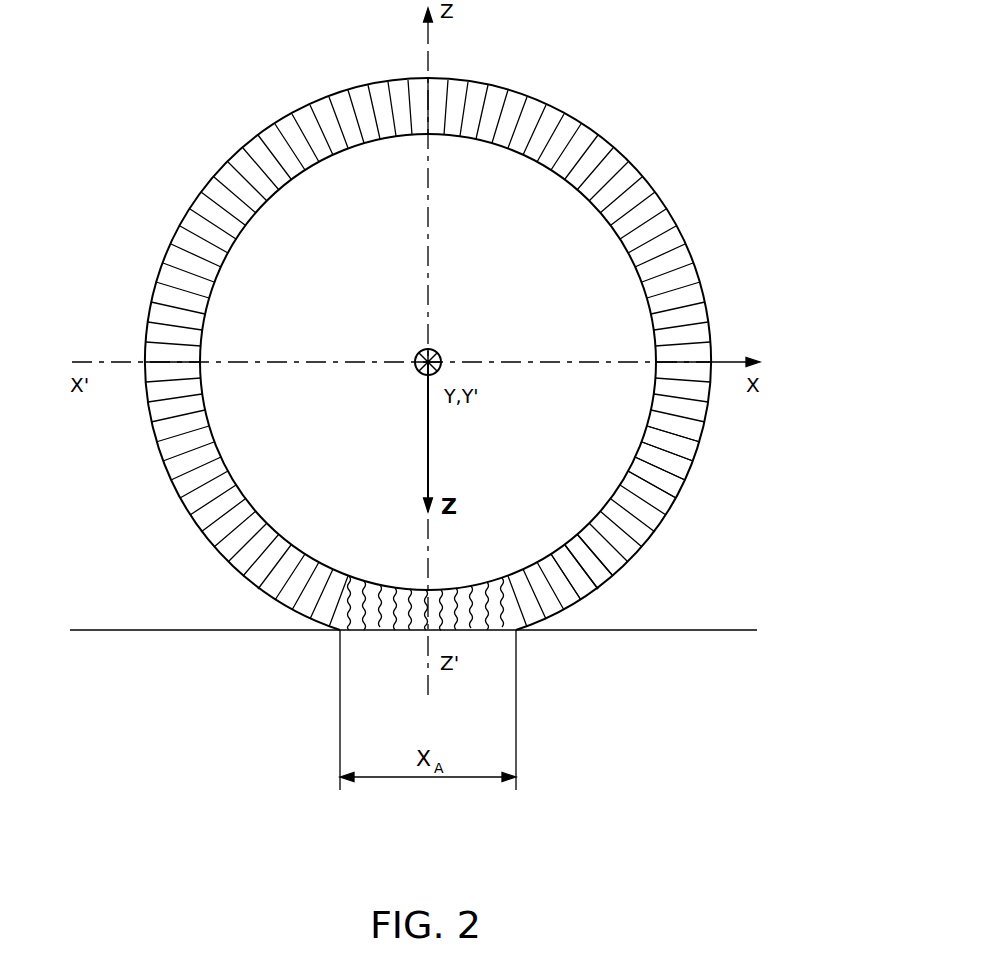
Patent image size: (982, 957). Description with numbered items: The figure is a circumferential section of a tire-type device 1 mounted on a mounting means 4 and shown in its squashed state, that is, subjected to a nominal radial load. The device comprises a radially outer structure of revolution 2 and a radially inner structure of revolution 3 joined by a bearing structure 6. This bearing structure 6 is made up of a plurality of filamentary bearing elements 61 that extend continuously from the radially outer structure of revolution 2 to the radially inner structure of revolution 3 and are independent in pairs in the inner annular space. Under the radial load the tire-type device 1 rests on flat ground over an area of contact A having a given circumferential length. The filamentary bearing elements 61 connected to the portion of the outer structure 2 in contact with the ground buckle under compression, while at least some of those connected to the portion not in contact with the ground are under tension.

The tire-type device 1 is at (451, 380).
The radially outer structure of revolution 2 is at (160, 124).
The radially inner structure of revolution 3 is at (584, 219).
The mounting means 4 is at (296, 196).
The bearing structure 6 is at (614, 560).
The filamentary bearing elements 61 is at (680, 463).
The area of contact A is at (397, 646).